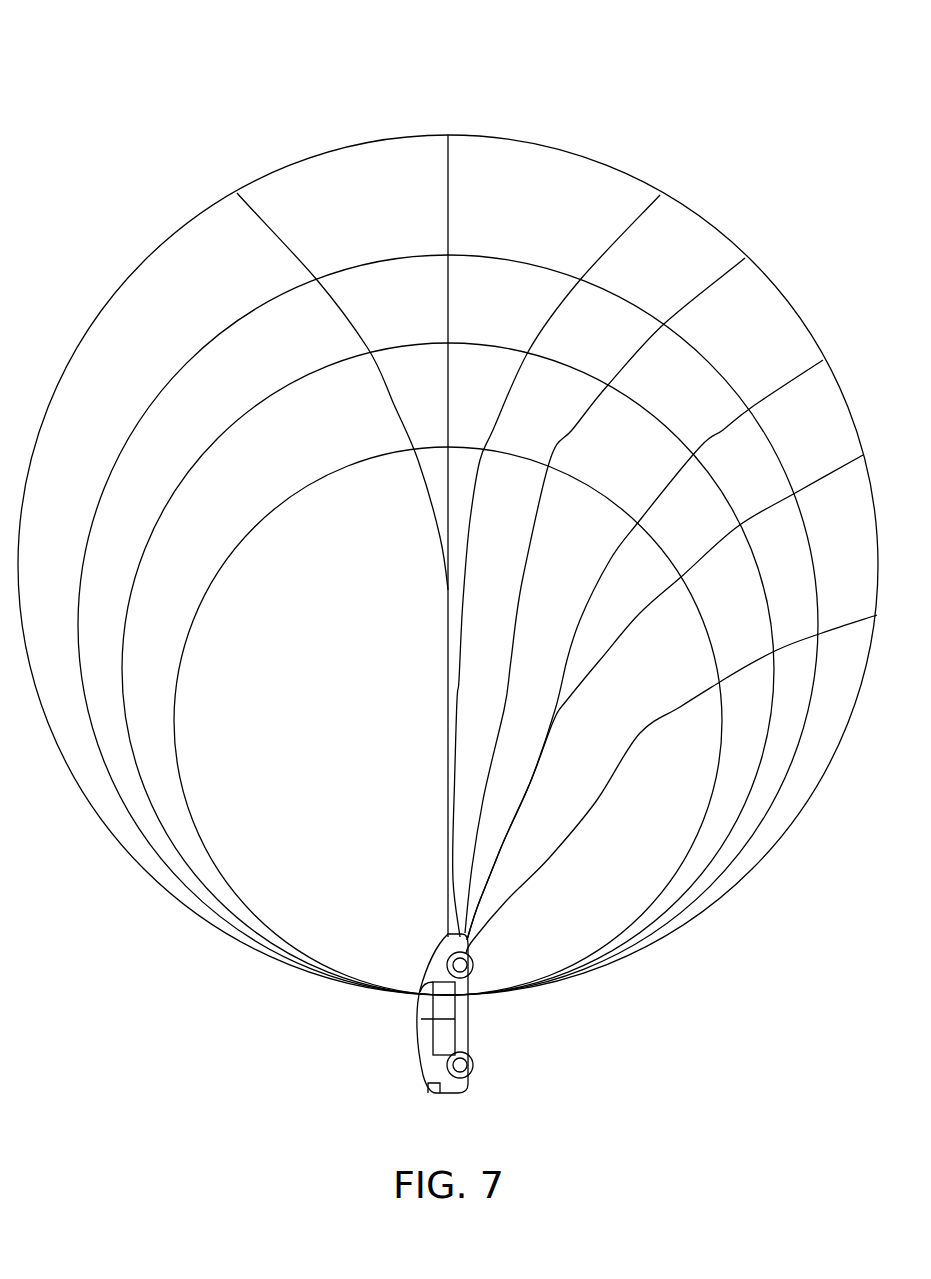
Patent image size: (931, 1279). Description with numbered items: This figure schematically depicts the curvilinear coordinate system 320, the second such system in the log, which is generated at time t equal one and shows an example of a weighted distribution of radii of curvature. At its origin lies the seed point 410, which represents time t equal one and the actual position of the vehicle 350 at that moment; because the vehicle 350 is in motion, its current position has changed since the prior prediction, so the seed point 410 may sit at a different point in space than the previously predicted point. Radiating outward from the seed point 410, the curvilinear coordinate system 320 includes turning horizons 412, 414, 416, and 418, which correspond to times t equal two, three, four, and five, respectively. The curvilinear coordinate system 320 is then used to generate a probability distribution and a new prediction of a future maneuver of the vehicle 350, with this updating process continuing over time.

The curvilinear coordinate system 320 is at (148, 120).
The turning horizon 418 is at (355, 146).
The turning horizon 416 is at (494, 257).
The turning horizon 414 is at (575, 366).
The turning horizon 412 is at (600, 491).
The seed point 410 is at (449, 999).
The vehicle 350 is at (420, 1058).